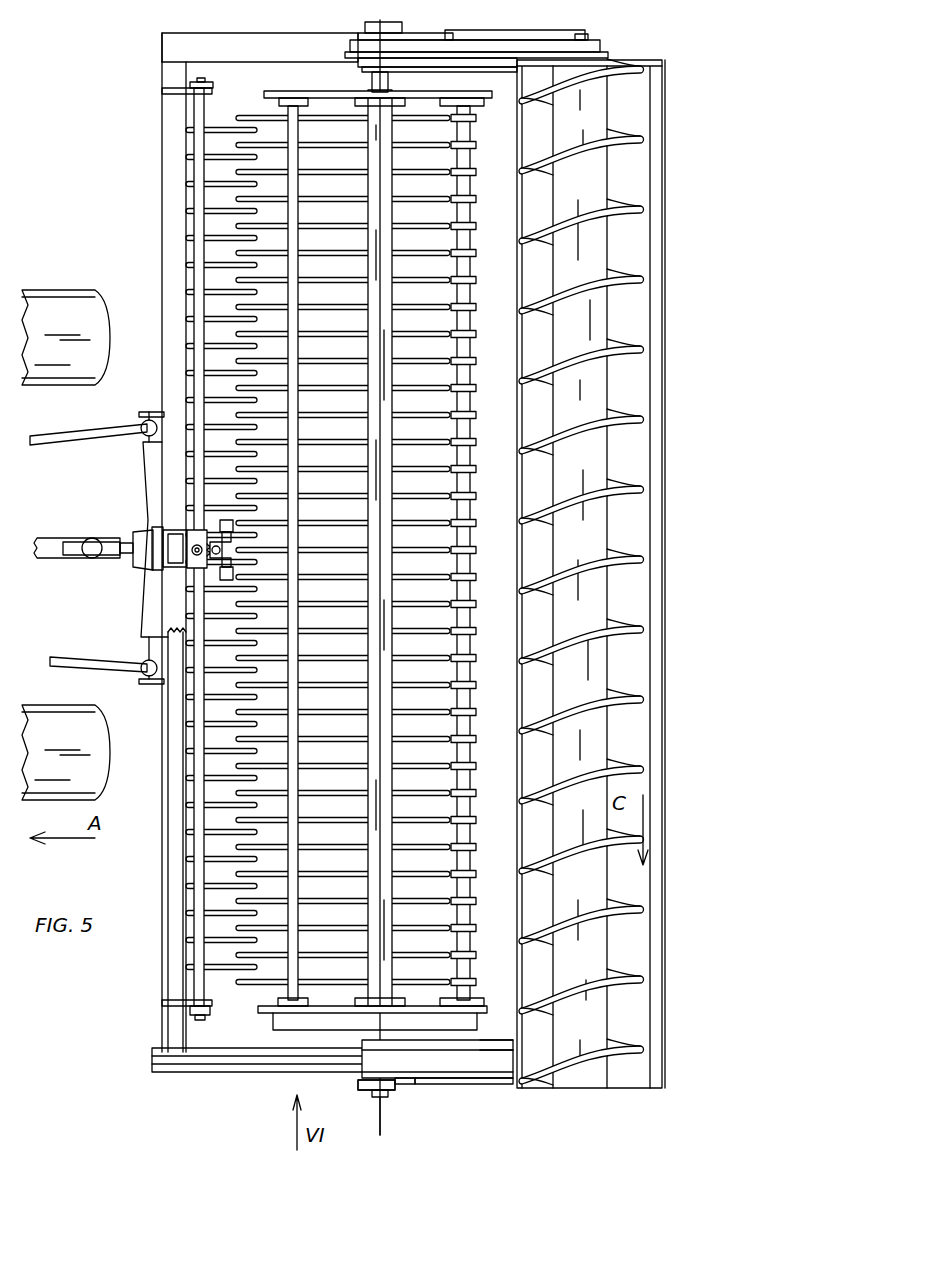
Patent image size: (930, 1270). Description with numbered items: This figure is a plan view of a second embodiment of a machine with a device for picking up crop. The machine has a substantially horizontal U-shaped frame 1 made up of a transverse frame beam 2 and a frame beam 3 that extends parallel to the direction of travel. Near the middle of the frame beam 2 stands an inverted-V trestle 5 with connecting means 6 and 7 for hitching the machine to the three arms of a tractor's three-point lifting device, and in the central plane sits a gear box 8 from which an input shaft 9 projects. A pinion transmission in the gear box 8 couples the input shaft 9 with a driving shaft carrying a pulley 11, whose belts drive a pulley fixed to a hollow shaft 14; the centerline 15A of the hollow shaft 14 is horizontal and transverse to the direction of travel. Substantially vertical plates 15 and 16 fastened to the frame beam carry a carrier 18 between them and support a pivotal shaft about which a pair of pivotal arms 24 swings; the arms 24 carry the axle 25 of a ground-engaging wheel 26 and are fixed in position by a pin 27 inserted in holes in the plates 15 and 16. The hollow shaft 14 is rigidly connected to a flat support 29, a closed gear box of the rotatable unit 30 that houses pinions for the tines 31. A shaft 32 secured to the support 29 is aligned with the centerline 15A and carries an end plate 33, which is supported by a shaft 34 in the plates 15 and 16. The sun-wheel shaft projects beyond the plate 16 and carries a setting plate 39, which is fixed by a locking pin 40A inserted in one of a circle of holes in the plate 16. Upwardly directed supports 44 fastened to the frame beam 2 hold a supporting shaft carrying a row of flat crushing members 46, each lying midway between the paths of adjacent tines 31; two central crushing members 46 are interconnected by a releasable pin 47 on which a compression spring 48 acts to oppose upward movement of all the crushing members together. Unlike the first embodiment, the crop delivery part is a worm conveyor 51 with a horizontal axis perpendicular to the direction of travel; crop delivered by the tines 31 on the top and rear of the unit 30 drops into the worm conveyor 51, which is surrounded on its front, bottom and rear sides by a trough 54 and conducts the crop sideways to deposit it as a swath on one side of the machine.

The frame 1 is at (152, 229).
The frame beam 2 is at (178, 252).
The frame beam 3 is at (230, 48).
The trestle 5 is at (132, 470).
The connecting means 6 is at (147, 412).
The connecting means 7 is at (166, 528).
The gear box 8 is at (135, 532).
The input shaft 9 is at (125, 572).
The pulley 11 is at (468, 190).
The hollow shaft 14 is at (380, 1035).
The plate 15 is at (405, 75).
The centerline 15A is at (380, 1132).
The plate 16 is at (395, 30).
The carrier 18 is at (485, 1060).
The pivotal arms 24 is at (505, 15).
The axle 25 is at (540, 34).
The ground-engaging wheel 26 is at (580, 40).
The pin 27 is at (435, 33).
The flat support 29 is at (280, 1026).
The rotatable unit 30 is at (412, 625).
The tines 31 is at (472, 250).
The shaft 32 is at (382, 242).
The end plate 33 is at (285, 90).
The shaft 34 is at (365, 78).
The setting plate 39 is at (360, 1085).
The locking pin 40A is at (388, 1095).
The support 44 is at (160, 92).
The crushing members 46 is at (220, 135).
The releasable pin 47 is at (232, 518).
The compression spring 48 is at (232, 578).
The worm conveyor 51 is at (627, 608).
The trough 54 is at (652, 492).